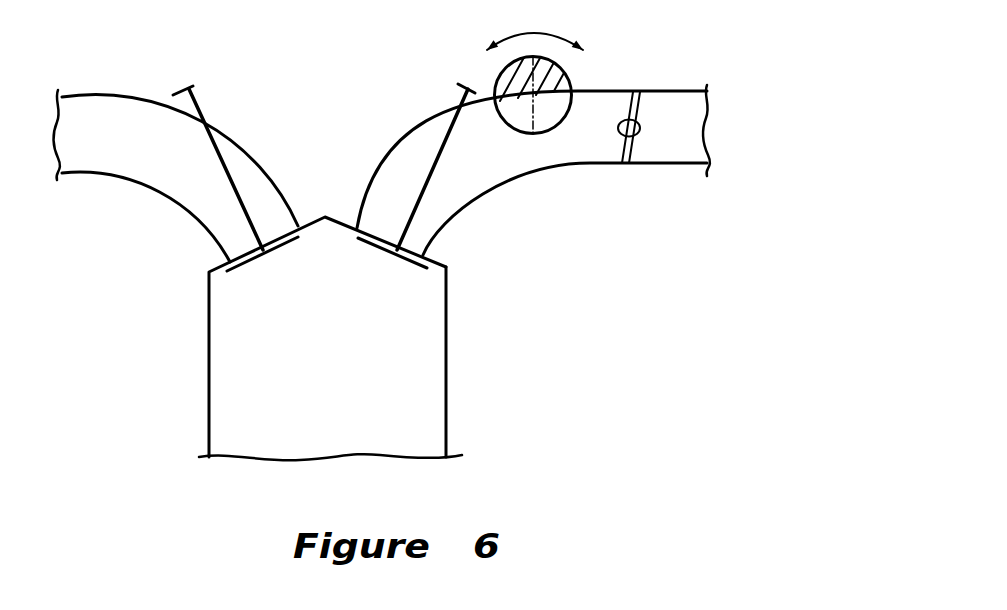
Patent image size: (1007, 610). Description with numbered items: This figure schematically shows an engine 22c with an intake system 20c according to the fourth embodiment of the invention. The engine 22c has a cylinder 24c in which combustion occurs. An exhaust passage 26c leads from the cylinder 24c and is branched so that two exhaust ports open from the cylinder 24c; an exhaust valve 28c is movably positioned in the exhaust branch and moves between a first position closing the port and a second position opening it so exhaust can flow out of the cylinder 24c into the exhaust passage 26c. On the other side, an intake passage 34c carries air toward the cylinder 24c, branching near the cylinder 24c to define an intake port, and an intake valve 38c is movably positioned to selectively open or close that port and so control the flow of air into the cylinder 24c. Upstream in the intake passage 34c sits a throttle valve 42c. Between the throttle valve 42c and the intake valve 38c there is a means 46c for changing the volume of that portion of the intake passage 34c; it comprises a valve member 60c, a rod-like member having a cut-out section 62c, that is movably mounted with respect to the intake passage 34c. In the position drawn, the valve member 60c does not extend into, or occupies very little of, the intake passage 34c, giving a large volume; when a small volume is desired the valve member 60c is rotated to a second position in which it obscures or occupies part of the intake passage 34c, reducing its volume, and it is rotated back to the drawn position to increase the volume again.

The intake system 20c is at (366, 158).
The engine 22c is at (524, 306).
The cylinder 24c is at (446, 378).
The exhaust passage 26c is at (137, 98).
The exhaust valve 28c is at (232, 190).
The intake passage 34c is at (403, 150).
The intake valve 38c is at (430, 180).
The throttle valve 42c is at (632, 143).
The means for changing the volume 46c is at (584, 79).
The valve member 60c is at (565, 115).
The cut-out section 62c is at (520, 115).